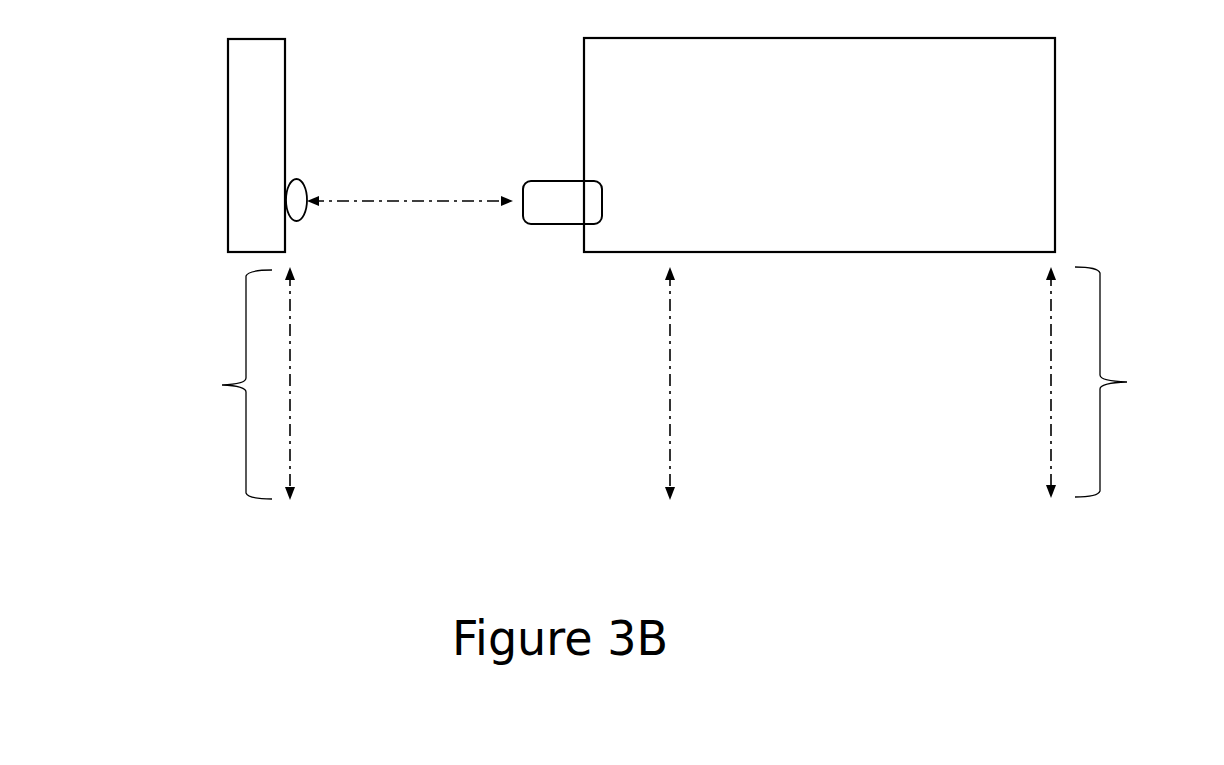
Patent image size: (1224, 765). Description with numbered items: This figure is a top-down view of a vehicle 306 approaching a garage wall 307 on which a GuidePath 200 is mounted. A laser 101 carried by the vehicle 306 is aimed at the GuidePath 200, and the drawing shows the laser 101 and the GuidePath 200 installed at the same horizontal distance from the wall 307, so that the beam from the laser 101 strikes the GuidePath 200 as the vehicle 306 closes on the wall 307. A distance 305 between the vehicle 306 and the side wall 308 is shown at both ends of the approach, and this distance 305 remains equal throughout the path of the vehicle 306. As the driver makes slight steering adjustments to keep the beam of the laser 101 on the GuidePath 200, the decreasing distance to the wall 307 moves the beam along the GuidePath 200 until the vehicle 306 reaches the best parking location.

The laser 101 is at (542, 163).
The GuidePath 200 is at (326, 232).
The distance 305 is at (672, 383).
The vehicle 306 is at (851, 145).
The wall 307 is at (219, 145).
The side wall 308 is at (1059, 401).